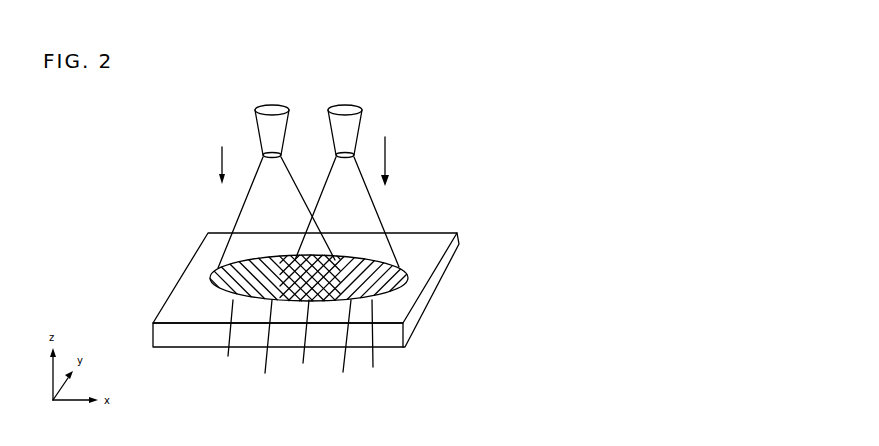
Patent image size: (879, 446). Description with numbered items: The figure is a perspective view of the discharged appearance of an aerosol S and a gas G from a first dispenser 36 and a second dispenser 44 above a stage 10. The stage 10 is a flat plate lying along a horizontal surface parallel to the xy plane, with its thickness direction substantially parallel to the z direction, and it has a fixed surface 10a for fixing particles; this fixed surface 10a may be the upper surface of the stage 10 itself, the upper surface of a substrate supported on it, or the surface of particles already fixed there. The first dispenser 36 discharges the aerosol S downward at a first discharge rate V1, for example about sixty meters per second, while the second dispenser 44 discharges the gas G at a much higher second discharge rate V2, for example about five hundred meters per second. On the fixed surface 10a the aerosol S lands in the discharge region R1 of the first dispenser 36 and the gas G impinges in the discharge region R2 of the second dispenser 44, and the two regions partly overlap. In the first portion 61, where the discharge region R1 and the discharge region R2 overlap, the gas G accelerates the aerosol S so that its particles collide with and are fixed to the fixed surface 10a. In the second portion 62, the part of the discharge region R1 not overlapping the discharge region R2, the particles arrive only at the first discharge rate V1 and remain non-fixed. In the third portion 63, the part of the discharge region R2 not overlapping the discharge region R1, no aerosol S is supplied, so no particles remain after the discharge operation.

The stage 10 is at (334, 258).
The fixed surface 10a is at (431, 257).
The first dispenser 36 is at (258, 130).
The second dispenser 44 is at (361, 126).
The first discharge rate V1 is at (211, 165).
The second discharge rate V2 is at (395, 161).
The aerosol S is at (240, 212).
The gas G is at (378, 207).
The discharge region of the first dispenser R1 is at (223, 338).
The discharge region of the second dispenser R2 is at (377, 343).
The first portion 61 is at (302, 341).
The second portion 62 is at (263, 347).
The third portion 63 is at (342, 349).